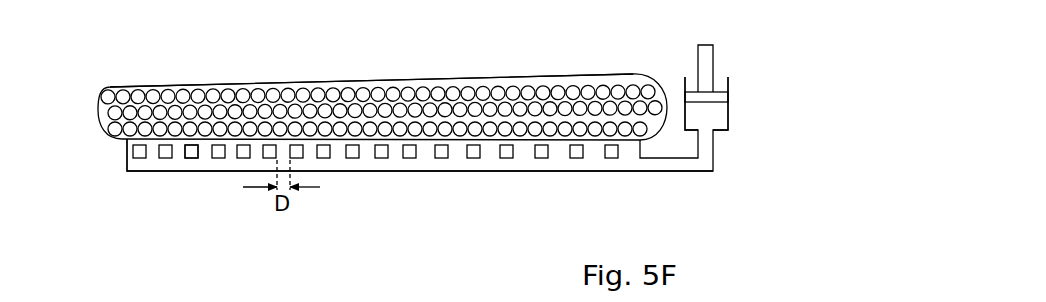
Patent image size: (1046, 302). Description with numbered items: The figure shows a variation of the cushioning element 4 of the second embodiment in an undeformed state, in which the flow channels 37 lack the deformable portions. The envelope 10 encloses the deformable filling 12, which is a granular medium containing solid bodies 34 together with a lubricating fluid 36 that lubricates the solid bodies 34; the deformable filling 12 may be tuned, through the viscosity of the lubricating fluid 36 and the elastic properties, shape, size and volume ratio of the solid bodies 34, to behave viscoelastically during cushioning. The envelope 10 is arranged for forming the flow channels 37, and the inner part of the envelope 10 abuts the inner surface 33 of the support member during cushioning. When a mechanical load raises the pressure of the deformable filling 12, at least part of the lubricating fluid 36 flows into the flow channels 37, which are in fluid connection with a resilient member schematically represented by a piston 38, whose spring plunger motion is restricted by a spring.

The cushioning element 4 is at (92, 72).
The envelope 10 is at (517, 80).
The deformable filling 12 is at (163, 113).
The inner surface of the support member 33 is at (192, 148).
The solid bodies 34 is at (358, 92).
The lubricating fluid 36 is at (267, 90).
The flow channels 37 is at (127, 150).
The piston 38 is at (743, 73).